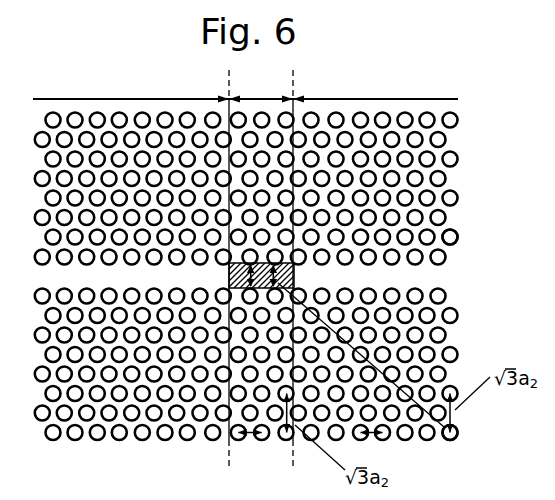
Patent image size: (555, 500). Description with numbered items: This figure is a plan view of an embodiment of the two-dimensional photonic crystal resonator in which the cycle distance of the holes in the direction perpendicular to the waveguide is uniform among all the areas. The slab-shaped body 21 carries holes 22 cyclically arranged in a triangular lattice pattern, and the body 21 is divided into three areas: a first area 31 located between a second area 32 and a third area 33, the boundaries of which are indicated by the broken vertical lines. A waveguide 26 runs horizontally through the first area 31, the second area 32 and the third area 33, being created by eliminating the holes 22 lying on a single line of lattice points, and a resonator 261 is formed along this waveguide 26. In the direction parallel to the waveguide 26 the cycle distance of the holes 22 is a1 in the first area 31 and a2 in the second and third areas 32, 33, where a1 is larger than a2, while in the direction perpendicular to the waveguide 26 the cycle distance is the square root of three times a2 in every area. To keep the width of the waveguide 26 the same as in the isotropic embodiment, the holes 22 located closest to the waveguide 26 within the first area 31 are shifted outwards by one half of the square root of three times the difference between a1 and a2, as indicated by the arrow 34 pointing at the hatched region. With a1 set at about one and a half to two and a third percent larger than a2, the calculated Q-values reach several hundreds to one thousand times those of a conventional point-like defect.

The body 21 is at (437, 152).
The hole 22 is at (452, 233).
The waveguide 26 is at (437, 280).
The resonator 261 is at (443, 438).
The first area 31 is at (261, 269).
The second area 32 is at (131, 88).
The third area 33 is at (375, 88).
The arrow 34 is at (268, 288).
The cycle distance of the holes in the first area a1 is at (255, 434).
The cycle distance of the holes in the second and third areas a2 is at (375, 435).